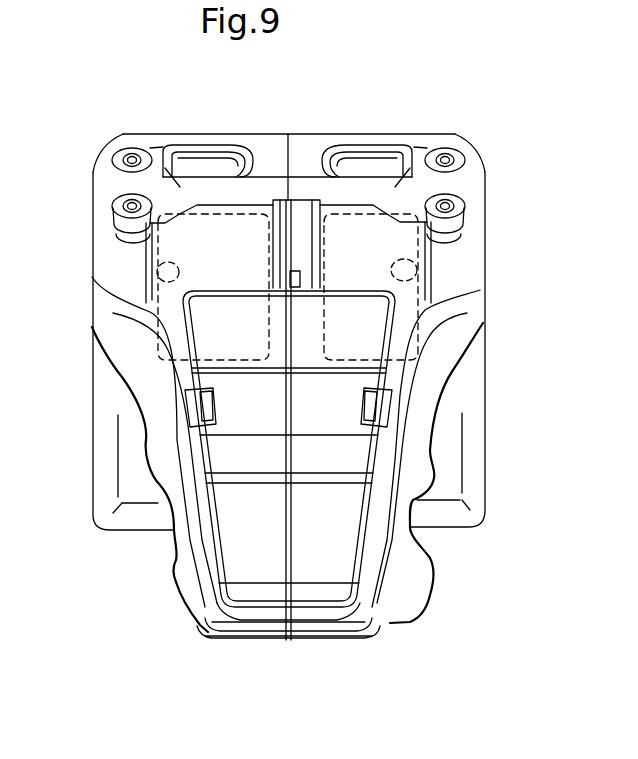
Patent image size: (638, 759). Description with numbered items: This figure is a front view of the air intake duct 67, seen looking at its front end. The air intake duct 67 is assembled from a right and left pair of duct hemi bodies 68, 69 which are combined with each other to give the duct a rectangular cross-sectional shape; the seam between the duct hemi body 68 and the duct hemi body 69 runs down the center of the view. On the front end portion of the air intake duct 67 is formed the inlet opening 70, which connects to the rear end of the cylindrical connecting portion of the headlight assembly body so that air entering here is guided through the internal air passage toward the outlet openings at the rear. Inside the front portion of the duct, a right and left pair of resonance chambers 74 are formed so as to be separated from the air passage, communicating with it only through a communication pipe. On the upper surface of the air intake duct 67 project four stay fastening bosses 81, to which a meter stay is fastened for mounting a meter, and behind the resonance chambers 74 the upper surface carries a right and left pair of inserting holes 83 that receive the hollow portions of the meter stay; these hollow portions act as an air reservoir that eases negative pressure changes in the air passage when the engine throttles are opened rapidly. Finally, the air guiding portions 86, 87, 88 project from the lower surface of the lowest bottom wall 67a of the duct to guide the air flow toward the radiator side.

The air intake duct 67 is at (166, 570).
The lowest bottom wall 67a is at (313, 640).
The duct hemi body 68 is at (467, 327).
The duct hemi body 69 is at (98, 306).
The inlet opening 70 is at (345, 565).
The resonance chamber 74 is at (157, 272).
The stay fastening boss 81 is at (115, 153).
The inserting hole 83 is at (211, 150).
The air guiding portion 86 is at (357, 638).
The air guiding portion 87 is at (225, 637).
The air guiding portion 88 is at (207, 637).